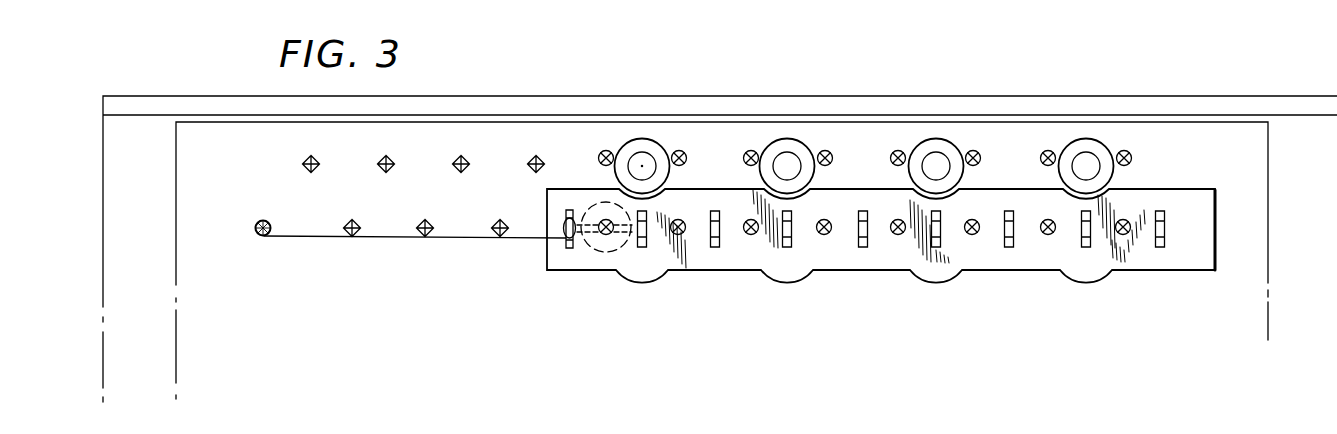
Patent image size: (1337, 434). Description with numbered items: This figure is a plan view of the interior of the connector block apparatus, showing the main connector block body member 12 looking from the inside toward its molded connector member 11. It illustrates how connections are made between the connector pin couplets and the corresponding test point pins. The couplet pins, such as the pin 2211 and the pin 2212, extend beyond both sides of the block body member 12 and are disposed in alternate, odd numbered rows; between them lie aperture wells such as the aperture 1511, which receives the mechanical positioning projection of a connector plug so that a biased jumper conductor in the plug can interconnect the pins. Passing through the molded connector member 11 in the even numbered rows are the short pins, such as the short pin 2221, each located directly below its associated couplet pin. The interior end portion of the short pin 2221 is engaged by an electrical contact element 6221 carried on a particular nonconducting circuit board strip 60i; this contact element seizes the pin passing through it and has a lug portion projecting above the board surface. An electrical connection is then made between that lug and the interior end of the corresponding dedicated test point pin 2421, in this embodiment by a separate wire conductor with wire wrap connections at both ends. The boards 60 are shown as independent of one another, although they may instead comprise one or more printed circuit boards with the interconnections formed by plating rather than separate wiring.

The connector block body member 12 is at (82, 93).
The molded connector member 11 is at (233, 137).
The test point pin 2421 is at (262, 235).
The aperture 1511 is at (640, 139).
The connector couplet pin 2211 is at (603, 151).
The connector couplet pin 2212 is at (681, 151).
The short pin 2221 is at (607, 233).
The electrical contact element 6221 is at (572, 245).
The circuit boards 60 is at (881, 259).
The nonconducting circuit board strip 60i is at (1187, 259).